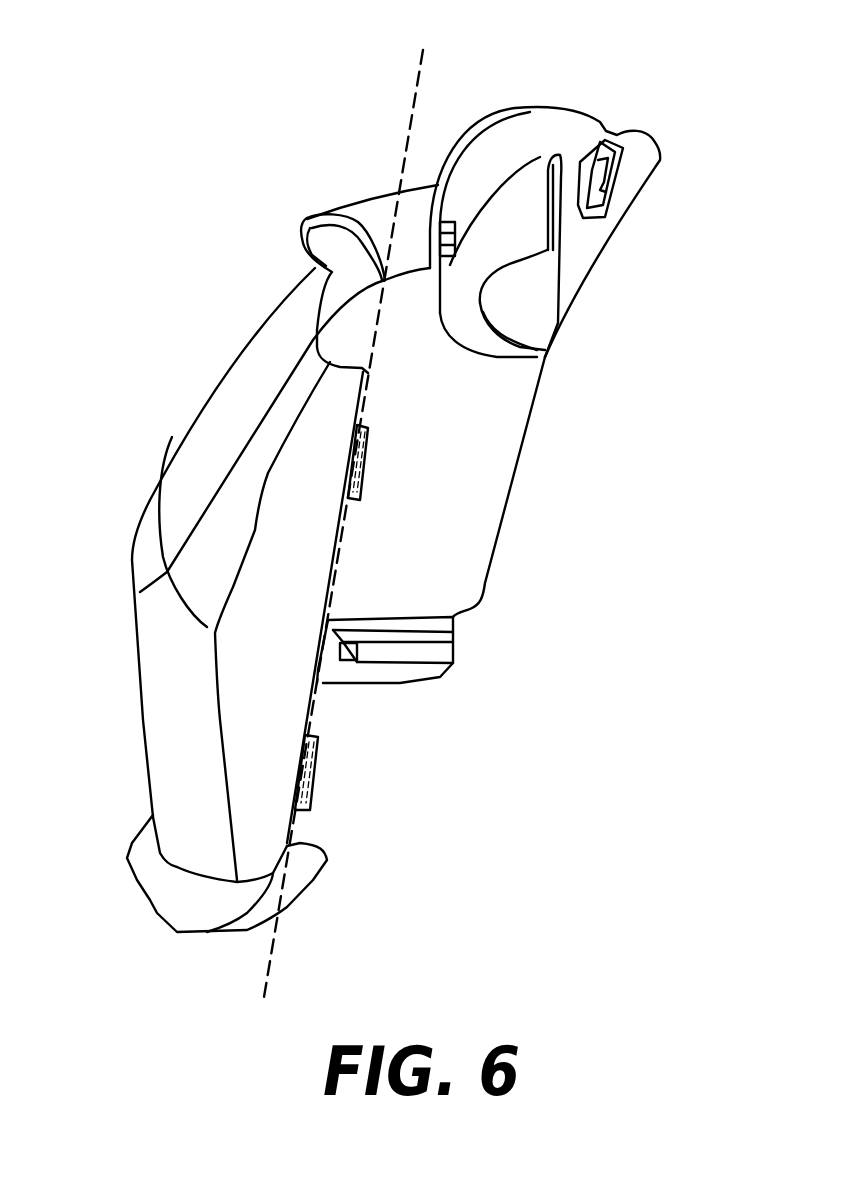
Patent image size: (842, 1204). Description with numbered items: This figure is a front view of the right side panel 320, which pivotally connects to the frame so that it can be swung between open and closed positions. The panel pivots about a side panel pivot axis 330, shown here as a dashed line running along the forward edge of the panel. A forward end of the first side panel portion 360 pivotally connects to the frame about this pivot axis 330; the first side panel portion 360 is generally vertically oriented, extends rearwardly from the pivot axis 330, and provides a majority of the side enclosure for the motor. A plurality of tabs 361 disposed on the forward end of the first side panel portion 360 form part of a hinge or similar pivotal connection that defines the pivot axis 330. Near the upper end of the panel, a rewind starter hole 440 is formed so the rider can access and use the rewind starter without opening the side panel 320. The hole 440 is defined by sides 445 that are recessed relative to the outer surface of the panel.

The right side panel 320 is at (183, 222).
The side panel pivot axis 330 is at (395, 139).
The first side panel portion 360 is at (178, 493).
The tabs 361 is at (368, 458).
The rewind starter hole 440 is at (515, 295).
The sides 445 is at (512, 230).